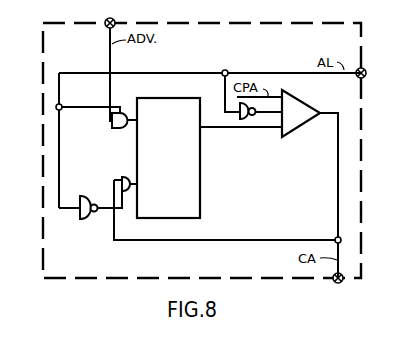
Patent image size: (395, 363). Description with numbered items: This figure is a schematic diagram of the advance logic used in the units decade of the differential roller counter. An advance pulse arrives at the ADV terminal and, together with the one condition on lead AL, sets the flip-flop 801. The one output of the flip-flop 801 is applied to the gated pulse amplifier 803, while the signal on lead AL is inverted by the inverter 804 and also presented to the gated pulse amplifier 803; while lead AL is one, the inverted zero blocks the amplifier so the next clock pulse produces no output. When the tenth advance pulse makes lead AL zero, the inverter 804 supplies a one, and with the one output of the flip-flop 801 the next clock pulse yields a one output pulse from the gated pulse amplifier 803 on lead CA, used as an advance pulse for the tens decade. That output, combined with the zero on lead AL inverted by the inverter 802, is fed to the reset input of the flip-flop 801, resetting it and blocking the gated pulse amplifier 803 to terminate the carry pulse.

The flip-flop 801 is at (168, 158).
The inverter 802 is at (93, 204).
The gated pulse amplifier 803 is at (326, 96).
The inverter 804 is at (253, 117).